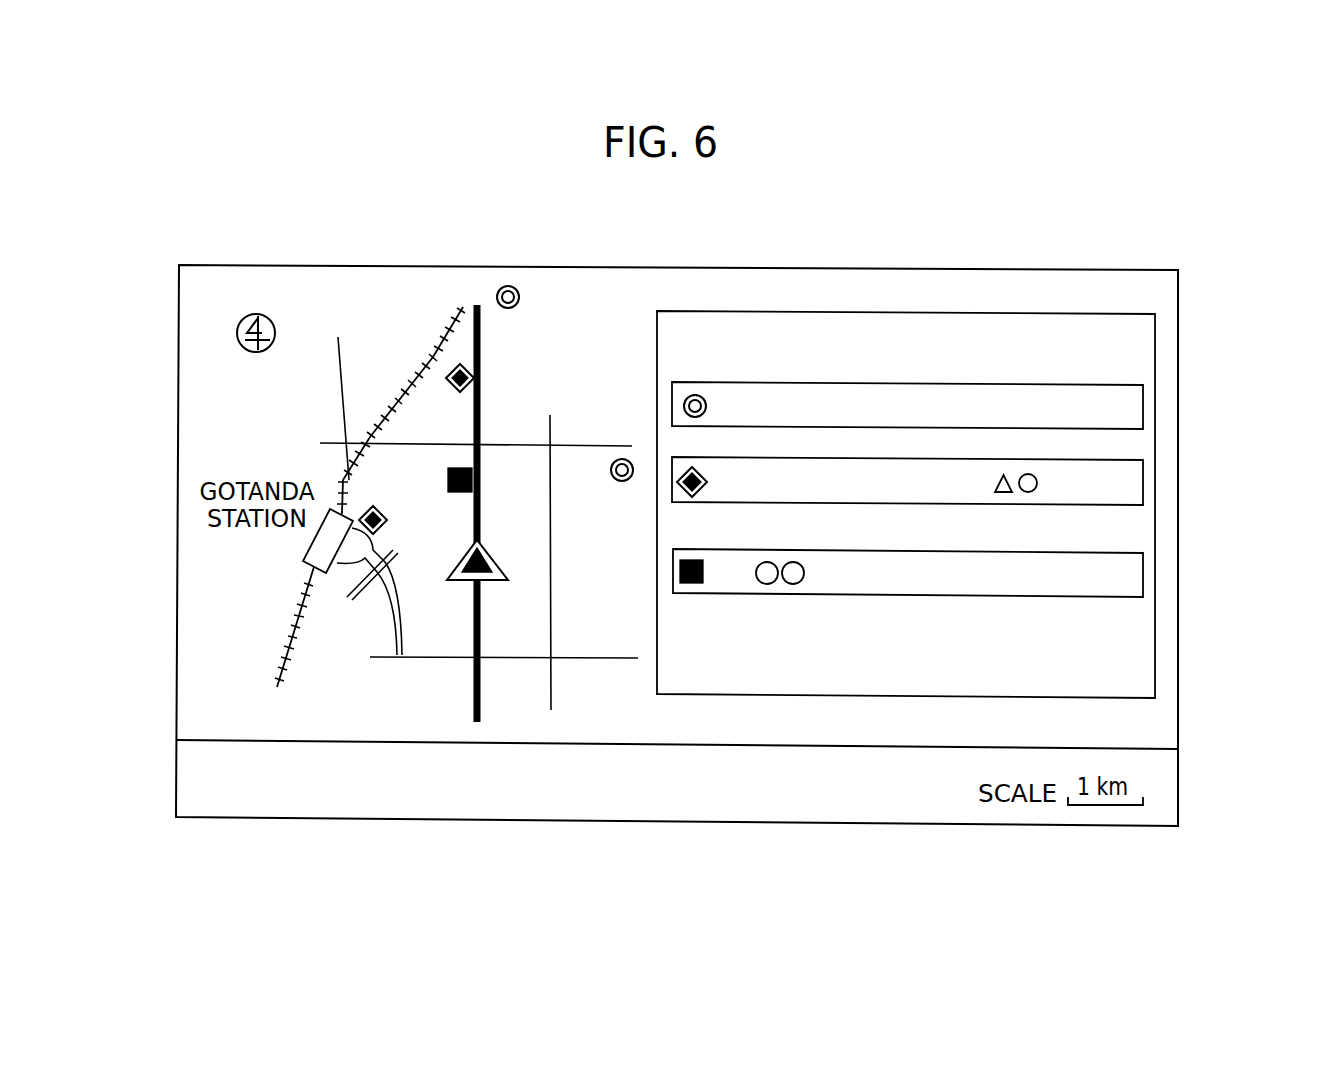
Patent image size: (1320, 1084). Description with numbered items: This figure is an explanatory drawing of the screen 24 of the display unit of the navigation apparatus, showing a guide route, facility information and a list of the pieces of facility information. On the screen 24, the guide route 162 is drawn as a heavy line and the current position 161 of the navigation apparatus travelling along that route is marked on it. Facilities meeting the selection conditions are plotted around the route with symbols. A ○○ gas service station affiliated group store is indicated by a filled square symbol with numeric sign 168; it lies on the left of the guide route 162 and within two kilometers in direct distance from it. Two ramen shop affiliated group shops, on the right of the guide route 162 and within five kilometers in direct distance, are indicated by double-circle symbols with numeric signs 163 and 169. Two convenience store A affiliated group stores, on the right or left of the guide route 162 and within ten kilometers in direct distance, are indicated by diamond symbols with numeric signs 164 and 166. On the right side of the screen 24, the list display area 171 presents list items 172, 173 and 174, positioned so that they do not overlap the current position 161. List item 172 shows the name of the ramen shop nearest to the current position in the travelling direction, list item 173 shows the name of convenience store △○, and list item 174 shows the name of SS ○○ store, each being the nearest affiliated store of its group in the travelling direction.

The screen 24 is at (850, 826).
The current position 161 is at (487, 582).
The guide route 162 is at (483, 365).
The ramen shop symbol 163 is at (509, 286).
The convenience store symbol 164 is at (378, 505).
The convenience store symbol 166 is at (447, 367).
The gas service station symbol 168 is at (462, 468).
The ramen shop symbol 169 is at (620, 482).
The list display area 171 is at (1155, 340).
The list item 172 is at (1143, 409).
The list item 173 is at (1143, 482).
The list item 174 is at (1143, 575).